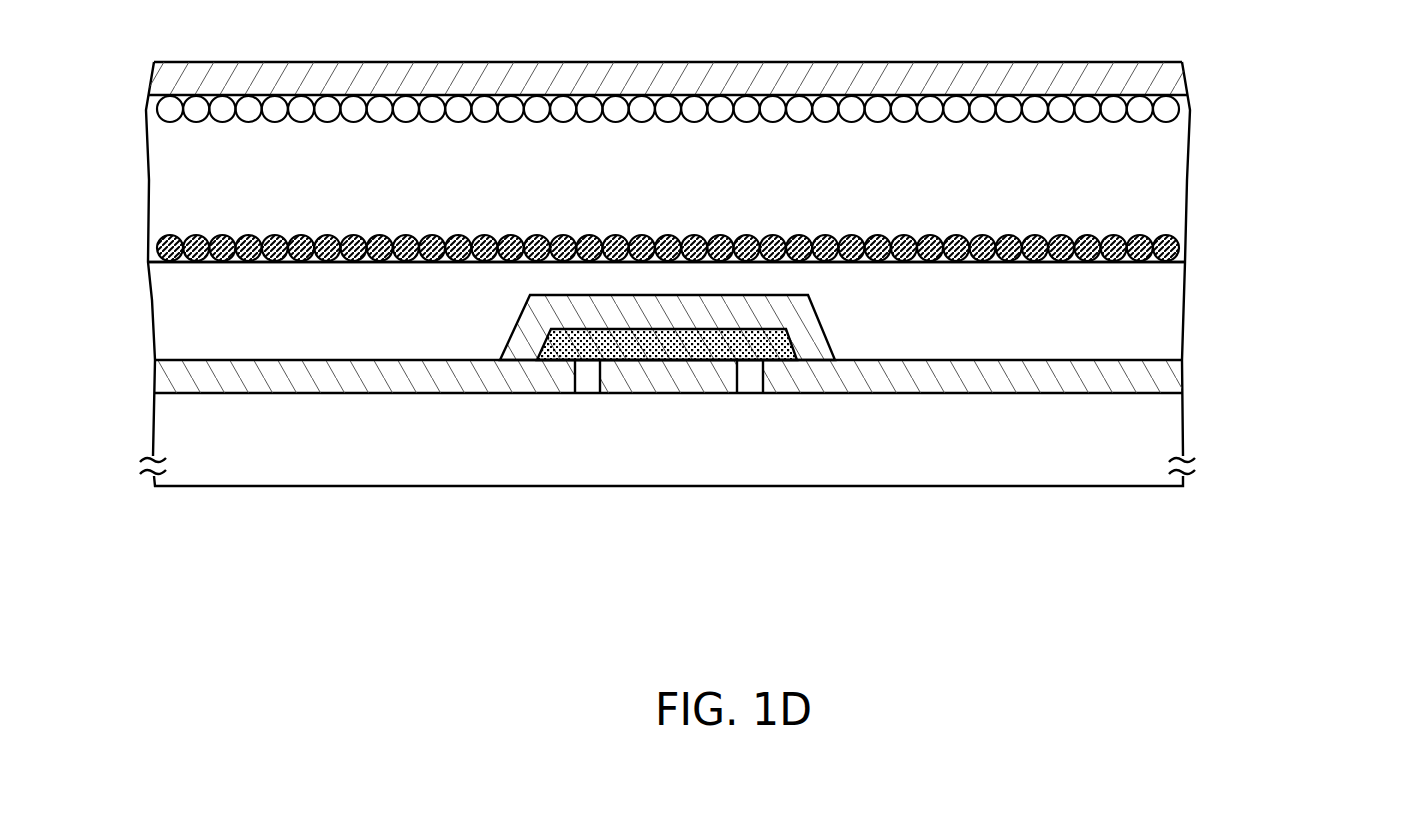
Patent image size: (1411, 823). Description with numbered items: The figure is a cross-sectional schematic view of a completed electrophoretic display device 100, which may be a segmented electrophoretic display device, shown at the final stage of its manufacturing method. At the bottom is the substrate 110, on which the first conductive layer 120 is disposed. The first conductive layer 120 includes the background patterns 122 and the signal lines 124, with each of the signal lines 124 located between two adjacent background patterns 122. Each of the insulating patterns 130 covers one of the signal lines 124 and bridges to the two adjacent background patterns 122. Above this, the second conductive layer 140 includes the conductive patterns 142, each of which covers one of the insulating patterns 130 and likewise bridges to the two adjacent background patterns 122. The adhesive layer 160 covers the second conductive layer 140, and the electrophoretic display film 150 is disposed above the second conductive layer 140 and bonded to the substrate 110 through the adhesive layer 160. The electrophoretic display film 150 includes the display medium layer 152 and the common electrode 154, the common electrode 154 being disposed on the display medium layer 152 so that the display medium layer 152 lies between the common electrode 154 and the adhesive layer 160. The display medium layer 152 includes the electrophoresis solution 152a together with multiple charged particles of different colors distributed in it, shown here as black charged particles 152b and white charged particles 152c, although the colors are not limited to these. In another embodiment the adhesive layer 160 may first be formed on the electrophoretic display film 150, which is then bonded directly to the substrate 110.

The electrophoretic display device 100 is at (1155, 518).
The substrate 110 is at (1165, 430).
The first conductive layer 120 is at (668, 476).
The background patterns 122 is at (385, 380).
The signal lines 124 is at (668, 449).
The insulating patterns 130 is at (566, 349).
The second conductive layer 140 is at (436, 316).
The conductive patterns 142 is at (533, 333).
The electrophoretic display film 150 is at (774, 159).
The display medium layer 152 is at (743, 177).
The electrophoresis solution 152a is at (1165, 178).
The black charged particles 152b is at (718, 247).
The white charged particles 152c is at (1165, 110).
The common electrode 154 is at (1164, 82).
The adhesive layer 160 is at (1165, 313).